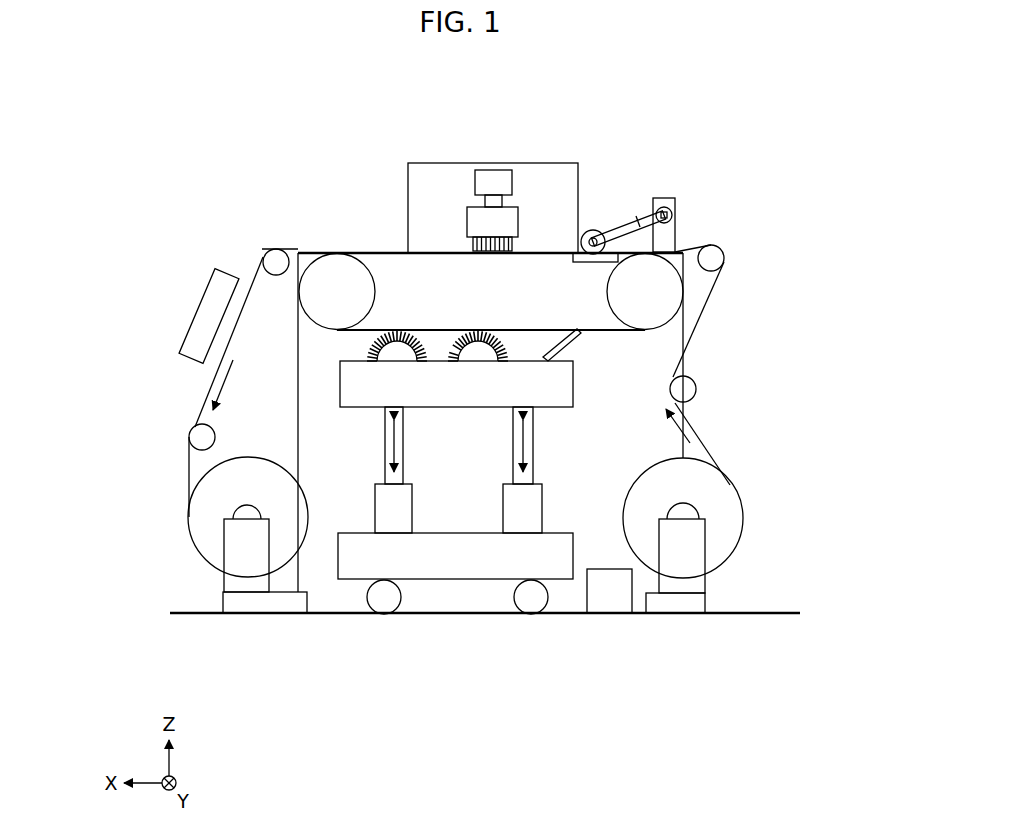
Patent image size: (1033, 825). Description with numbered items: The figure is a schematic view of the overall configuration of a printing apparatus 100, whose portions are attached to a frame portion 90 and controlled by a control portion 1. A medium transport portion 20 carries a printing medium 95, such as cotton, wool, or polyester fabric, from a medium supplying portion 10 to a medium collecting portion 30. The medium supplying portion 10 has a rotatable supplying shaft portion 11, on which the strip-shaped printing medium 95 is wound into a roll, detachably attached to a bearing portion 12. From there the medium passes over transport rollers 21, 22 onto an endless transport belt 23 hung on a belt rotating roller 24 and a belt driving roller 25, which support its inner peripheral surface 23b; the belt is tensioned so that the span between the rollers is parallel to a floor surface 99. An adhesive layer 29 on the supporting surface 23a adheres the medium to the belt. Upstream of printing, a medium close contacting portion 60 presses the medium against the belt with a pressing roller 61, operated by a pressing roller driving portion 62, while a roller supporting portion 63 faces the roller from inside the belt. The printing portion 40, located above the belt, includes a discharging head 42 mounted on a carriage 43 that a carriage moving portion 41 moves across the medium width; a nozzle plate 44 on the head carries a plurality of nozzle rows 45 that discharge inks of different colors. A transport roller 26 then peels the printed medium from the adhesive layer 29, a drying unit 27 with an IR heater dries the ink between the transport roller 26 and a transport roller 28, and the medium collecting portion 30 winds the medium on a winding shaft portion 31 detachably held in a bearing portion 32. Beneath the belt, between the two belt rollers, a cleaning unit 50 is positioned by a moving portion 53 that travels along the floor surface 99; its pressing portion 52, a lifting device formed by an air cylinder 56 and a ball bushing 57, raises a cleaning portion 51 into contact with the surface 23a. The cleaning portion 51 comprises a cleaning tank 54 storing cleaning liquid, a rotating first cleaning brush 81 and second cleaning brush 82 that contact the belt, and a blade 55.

The control portion 1 is at (608, 612).
The medium supplying portion 10 is at (715, 535).
The supplying shaft portion 11 is at (681, 511).
The bearing portion 12 is at (698, 584).
The medium transport portion 20 is at (462, 307).
The transport roller 21 is at (690, 389).
The transport roller 22 is at (714, 255).
The transport belt 23 is at (605, 331).
The surface (supporting surface) 23a is at (380, 252).
The inner peripheral surface 23b is at (397, 254).
The belt rotating roller 24 is at (667, 278).
The belt driving roller 25 is at (327, 260).
The transport roller 26 is at (272, 253).
The drying unit 27 is at (215, 287).
The transport roller 28 is at (190, 436).
The adhesive layer 29 is at (350, 250).
The medium collecting portion 30 is at (217, 535).
The winding shaft portion 31 is at (245, 511).
The bearing portion 32 is at (232, 584).
The printing portion 40 is at (481, 171).
The carriage moving portion 41 is at (492, 172).
The discharging head 42 is at (470, 238).
The carriage 43 is at (472, 203).
The nozzle plate 44 is at (474, 257).
The nozzle rows 45 is at (512, 257).
The cleaning unit 50 is at (484, 540).
The cleaning portion 51 is at (484, 393).
The pressing portion 52 is at (458, 470).
The moving portion 53 is at (380, 609).
The cleaning tank 54 is at (355, 383).
The blade 55 is at (568, 352).
The air cylinder 56 is at (404, 456).
The ball bushing 57 is at (458, 505).
The medium close contacting portion 60 is at (621, 196).
The pressing roller 61 is at (590, 230).
The pressing roller driving portion 62 is at (663, 205).
The roller supporting portion 63 is at (590, 263).
The first cleaning brush 81 is at (397, 355).
The second cleaning brush 82 is at (480, 355).
The frame portion 90 is at (297, 390).
The printing medium 95 is at (703, 440).
The floor surface 99 is at (786, 612).
The printing apparatus 100 is at (688, 138).